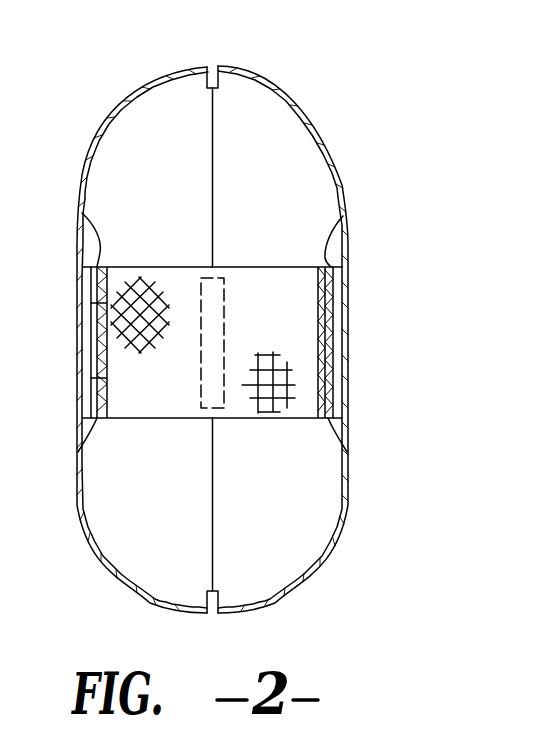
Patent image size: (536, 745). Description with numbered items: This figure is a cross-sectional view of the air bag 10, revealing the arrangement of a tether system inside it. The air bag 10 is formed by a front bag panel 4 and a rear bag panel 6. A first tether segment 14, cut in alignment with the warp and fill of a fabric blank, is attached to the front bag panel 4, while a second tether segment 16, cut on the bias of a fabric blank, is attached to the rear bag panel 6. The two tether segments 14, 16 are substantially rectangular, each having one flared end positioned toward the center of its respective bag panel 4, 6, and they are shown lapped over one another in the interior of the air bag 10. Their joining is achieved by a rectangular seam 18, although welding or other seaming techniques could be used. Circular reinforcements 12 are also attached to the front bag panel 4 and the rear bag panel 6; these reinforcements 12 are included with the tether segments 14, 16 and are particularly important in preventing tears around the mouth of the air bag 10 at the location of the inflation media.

The air bag 10 is at (317, 87).
The front bag panel 4 is at (317, 122).
The rear bag panel 6 is at (95, 150).
The circular reinforcement 12 is at (84, 218).
The tether segment 14 is at (250, 265).
The tether segment 16 is at (170, 265).
The rectangular seam 18 is at (224, 400).